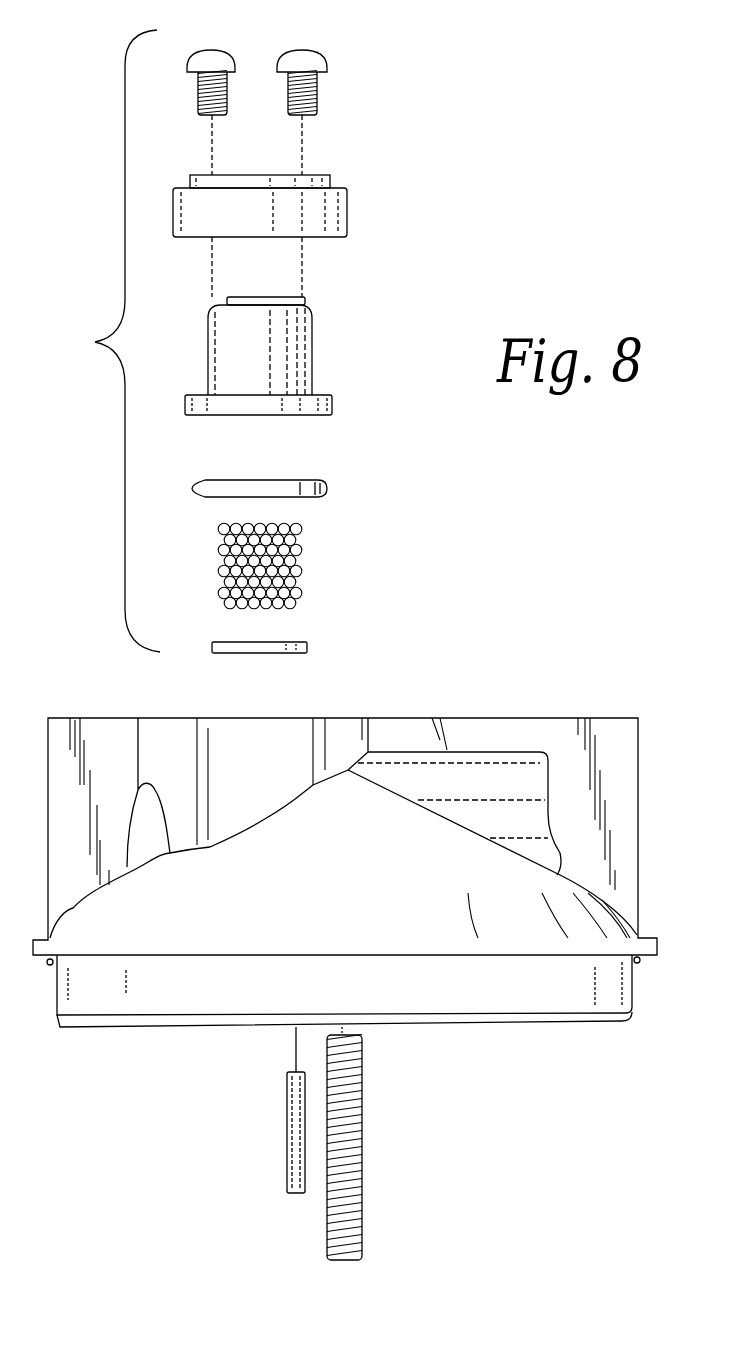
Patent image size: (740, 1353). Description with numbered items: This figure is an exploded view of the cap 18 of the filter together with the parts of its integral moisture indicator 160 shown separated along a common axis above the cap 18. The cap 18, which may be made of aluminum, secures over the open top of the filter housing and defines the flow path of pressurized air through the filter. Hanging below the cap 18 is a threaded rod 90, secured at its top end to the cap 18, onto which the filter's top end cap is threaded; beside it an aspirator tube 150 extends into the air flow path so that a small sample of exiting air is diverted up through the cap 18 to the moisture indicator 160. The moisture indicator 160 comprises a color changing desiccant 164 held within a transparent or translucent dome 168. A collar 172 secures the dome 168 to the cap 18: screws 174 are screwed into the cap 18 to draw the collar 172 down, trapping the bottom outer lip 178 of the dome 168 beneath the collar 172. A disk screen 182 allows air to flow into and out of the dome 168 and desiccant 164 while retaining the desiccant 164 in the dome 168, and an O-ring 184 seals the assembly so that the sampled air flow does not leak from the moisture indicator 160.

The cap 18 is at (351, 867).
The threaded rod 90 is at (362, 1153).
The aspirator tube 150 is at (287, 1110).
The moisture indicator 160 is at (108, 341).
The color changing desiccant 164 is at (302, 575).
The dome 168 is at (312, 353).
The collar 172 is at (347, 210).
The screws 174 is at (288, 95).
The bottom outer lip 178 is at (332, 405).
The disk screen 182 is at (307, 648).
The O-ring 184 is at (327, 488).